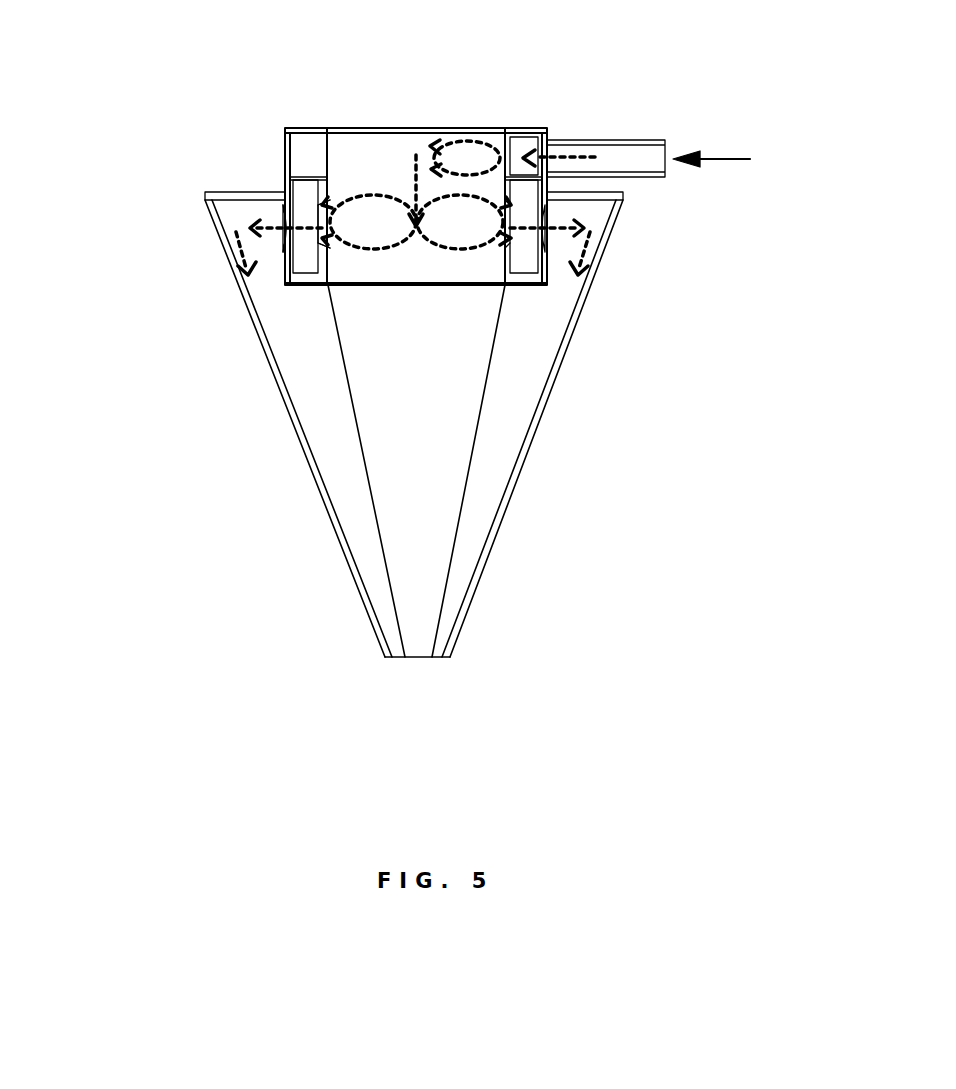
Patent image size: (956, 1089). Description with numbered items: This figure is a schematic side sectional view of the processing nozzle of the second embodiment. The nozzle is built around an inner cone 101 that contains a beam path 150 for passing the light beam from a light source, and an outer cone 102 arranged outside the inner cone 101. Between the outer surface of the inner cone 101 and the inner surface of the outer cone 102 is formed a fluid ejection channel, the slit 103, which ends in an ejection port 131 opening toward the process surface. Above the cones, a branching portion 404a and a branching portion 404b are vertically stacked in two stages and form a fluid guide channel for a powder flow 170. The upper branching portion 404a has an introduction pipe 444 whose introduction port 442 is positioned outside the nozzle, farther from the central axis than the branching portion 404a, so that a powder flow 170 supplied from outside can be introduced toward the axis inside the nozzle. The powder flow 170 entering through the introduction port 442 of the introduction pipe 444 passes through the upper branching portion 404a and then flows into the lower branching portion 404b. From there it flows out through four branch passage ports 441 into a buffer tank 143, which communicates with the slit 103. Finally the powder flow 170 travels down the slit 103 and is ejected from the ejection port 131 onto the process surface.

The inner cone 101 is at (513, 417).
The outer cone 102 is at (569, 349).
The fluid ejection channel (slit) 103 is at (493, 511).
The ejection port 131 is at (438, 658).
The buffer tank 143 is at (238, 210).
The beam path 150 is at (357, 150).
The powder flow 170 is at (466, 140).
The branching portion 404a is at (514, 140).
The branching portion 404b is at (532, 263).
The branch passage ports 441 is at (277, 215).
The introduction port 442 is at (667, 155).
The introduction pipe 444 is at (578, 140).